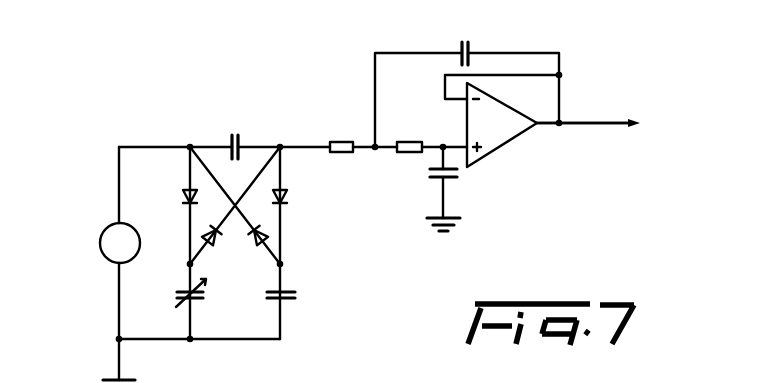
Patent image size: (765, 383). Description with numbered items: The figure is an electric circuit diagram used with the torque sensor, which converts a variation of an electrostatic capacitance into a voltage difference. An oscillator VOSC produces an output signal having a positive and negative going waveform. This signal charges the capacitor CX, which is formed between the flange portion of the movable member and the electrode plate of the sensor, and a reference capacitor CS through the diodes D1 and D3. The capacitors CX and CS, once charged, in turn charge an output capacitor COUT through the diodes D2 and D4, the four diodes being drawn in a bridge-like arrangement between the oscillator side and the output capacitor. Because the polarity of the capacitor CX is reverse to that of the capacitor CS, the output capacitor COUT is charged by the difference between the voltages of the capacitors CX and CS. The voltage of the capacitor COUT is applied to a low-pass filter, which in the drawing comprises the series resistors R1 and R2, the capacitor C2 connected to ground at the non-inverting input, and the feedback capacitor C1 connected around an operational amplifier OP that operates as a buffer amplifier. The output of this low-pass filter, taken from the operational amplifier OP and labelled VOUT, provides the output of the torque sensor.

The oscillator VOSC is at (96, 243).
The output capacitor COUT is at (233, 130).
The diode D1 is at (179, 196).
The diode D2 is at (213, 256).
The diode D3 is at (255, 256).
The diode D4 is at (292, 196).
The capacitor CX is at (201, 296).
The reference capacitor CS is at (292, 300).
The resistor R1 is at (341, 165).
The resistor R2 is at (409, 165).
The capacitor C1 is at (465, 37).
The capacitor C2 is at (453, 185).
The operational amplifier OP is at (502, 125).
The output voltage VOUT is at (611, 129).